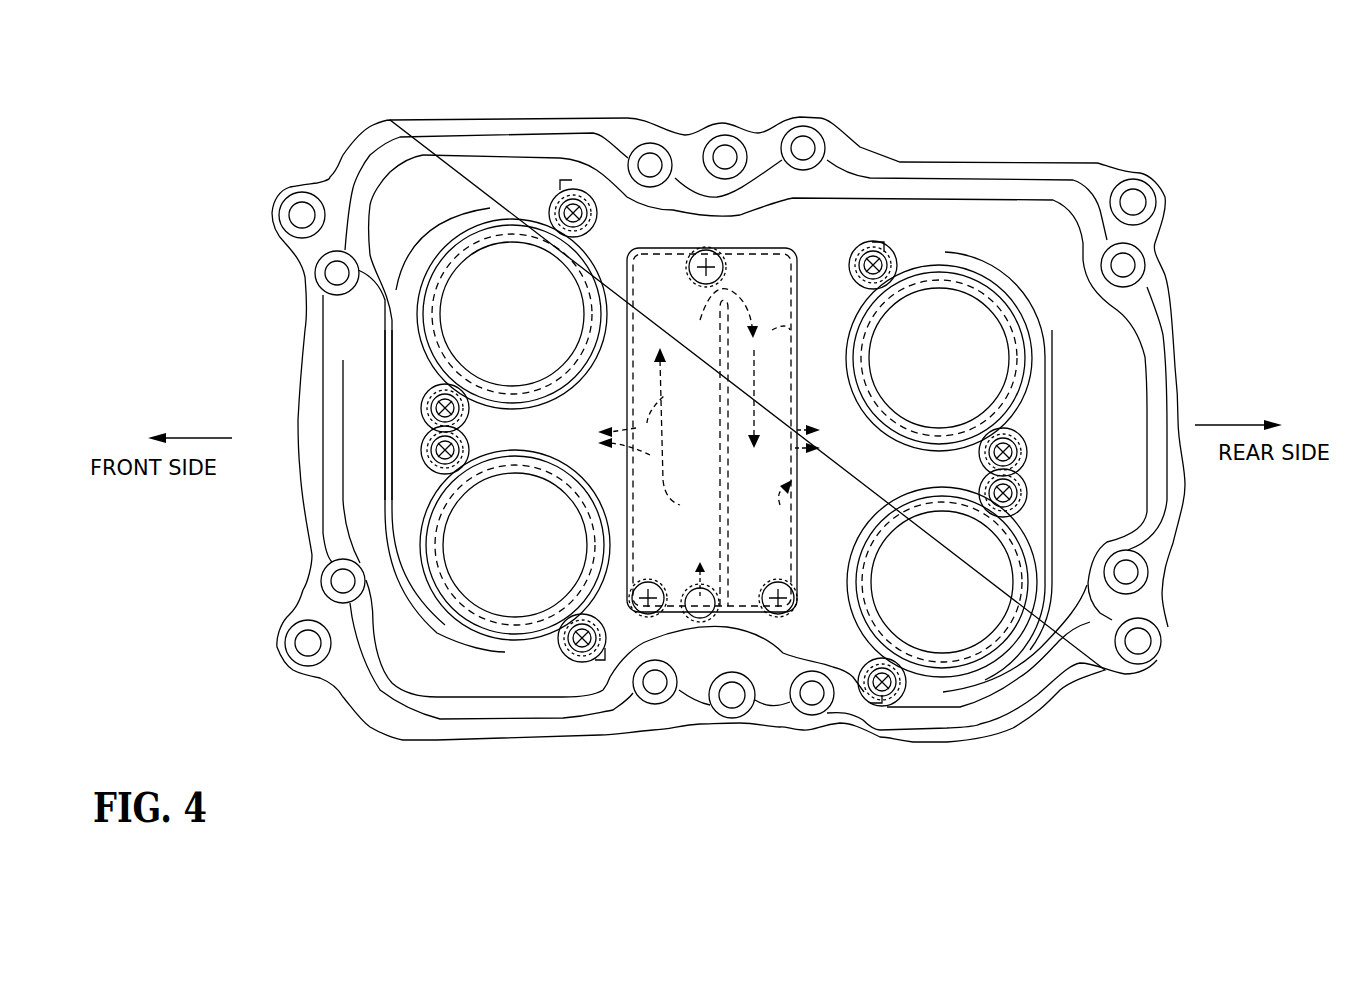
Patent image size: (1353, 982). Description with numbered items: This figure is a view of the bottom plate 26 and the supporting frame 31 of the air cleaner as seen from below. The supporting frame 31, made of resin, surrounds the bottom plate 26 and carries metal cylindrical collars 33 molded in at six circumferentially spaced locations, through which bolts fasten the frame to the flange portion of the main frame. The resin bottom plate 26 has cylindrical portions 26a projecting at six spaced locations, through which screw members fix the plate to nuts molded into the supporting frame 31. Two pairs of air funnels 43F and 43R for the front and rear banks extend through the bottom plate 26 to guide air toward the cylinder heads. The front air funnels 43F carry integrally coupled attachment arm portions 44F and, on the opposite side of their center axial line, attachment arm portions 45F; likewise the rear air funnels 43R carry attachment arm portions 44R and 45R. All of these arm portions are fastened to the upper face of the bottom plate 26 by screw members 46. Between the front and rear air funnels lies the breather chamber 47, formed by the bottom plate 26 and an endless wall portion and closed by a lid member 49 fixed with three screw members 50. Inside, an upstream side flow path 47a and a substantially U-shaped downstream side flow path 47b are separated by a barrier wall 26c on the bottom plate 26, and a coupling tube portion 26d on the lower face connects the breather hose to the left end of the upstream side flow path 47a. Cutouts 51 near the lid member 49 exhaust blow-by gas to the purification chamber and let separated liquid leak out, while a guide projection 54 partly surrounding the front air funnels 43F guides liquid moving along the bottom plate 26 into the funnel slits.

The bottom plate 26 is at (1025, 223).
The cylindrical portion 26a is at (362, 266).
The barrier wall 26c is at (713, 478).
The coupling tube portion 26d is at (690, 590).
The supporting frame 31 is at (627, 127).
The cylindrical collar 33 is at (290, 200).
The air funnel 43F is at (513, 222).
The air funnel 43R is at (950, 268).
The attachment arm portion 44F is at (420, 405).
The attachment arm portion 44R is at (1030, 458).
The attachment arm portion 45F is at (567, 190).
The attachment arm portion 45R is at (877, 240).
The screw member 46 is at (598, 232).
The breather chamber 47 is at (780, 505).
The upstream side flow path 47a is at (623, 400).
The downstream side flow path 47b is at (772, 330).
The lid member 49 is at (777, 397).
The screw member 50 is at (698, 282).
The cutout 51 is at (578, 473).
The guide projection 54 is at (380, 337).